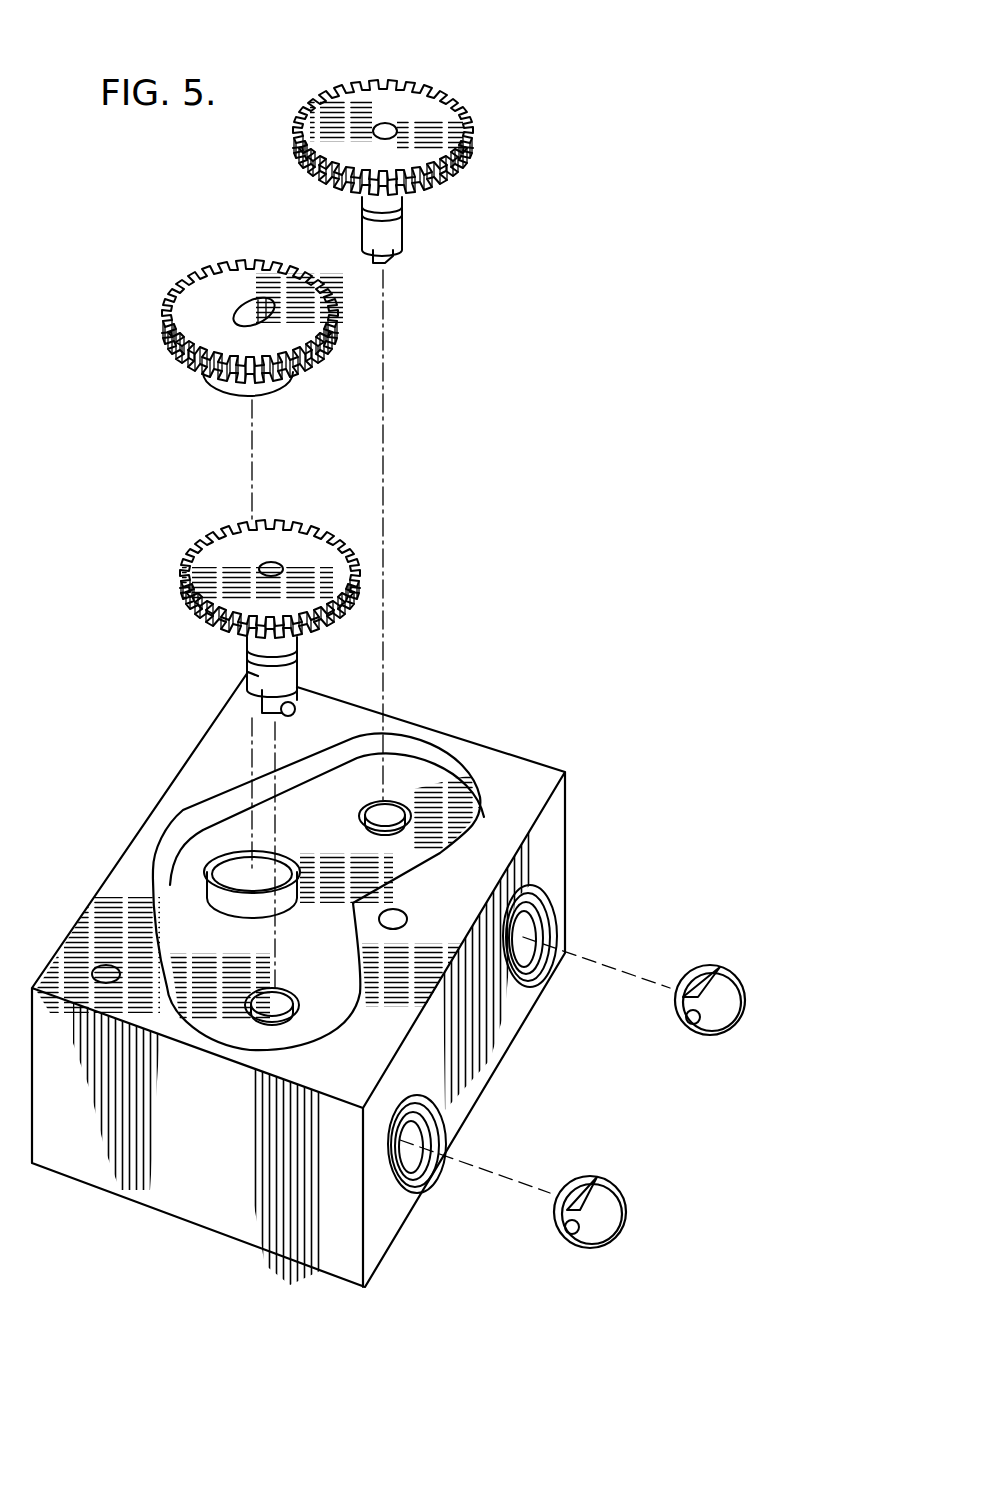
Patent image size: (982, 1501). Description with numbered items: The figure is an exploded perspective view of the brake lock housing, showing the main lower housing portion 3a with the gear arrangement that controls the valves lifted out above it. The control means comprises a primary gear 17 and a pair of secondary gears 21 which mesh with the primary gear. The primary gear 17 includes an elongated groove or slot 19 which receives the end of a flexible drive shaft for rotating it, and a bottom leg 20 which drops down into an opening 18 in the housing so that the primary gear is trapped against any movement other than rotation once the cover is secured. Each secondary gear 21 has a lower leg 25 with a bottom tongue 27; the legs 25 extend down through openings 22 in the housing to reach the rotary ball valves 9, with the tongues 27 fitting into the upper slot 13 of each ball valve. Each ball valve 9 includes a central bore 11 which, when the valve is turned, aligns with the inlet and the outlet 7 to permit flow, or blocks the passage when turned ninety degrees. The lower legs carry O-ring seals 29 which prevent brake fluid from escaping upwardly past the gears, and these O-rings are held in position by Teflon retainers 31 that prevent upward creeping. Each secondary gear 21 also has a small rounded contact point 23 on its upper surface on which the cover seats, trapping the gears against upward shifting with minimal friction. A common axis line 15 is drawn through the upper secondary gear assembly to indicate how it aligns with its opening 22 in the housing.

The main lower housing portion 3a is at (530, 778).
The outlet 7 is at (533, 915).
The rotary ball valve 9 is at (745, 996).
The central bore 11 is at (690, 1024).
The upper slot 13 is at (708, 962).
The axis of shaft 15 is at (405, 368).
The primary gear 17 is at (228, 268).
The opening 18 is at (216, 870).
The elongated groove or slot 19 is at (238, 310).
The bottom leg 20 is at (222, 390).
The secondary gear 21 is at (417, 110).
The opening 22 is at (397, 812).
The small rounded contact point 23 is at (455, 117).
The lower leg 25 is at (405, 232).
The bottom tongue 27 is at (395, 258).
The O-ring seal 29 is at (407, 207).
The Teflon retainer 31 is at (362, 205).